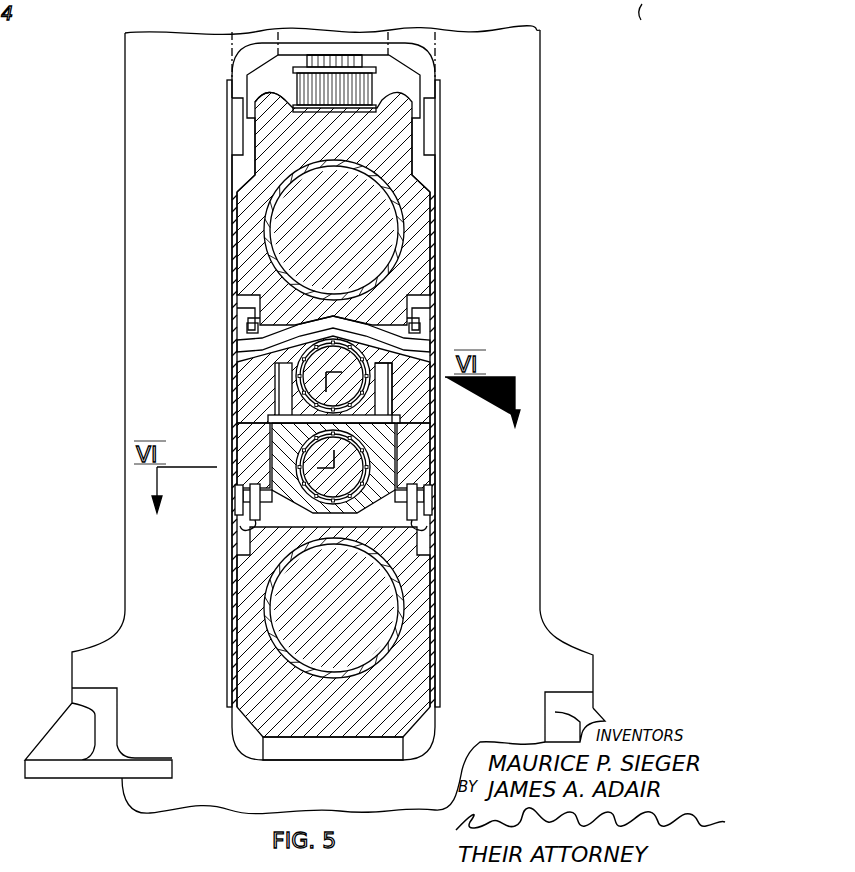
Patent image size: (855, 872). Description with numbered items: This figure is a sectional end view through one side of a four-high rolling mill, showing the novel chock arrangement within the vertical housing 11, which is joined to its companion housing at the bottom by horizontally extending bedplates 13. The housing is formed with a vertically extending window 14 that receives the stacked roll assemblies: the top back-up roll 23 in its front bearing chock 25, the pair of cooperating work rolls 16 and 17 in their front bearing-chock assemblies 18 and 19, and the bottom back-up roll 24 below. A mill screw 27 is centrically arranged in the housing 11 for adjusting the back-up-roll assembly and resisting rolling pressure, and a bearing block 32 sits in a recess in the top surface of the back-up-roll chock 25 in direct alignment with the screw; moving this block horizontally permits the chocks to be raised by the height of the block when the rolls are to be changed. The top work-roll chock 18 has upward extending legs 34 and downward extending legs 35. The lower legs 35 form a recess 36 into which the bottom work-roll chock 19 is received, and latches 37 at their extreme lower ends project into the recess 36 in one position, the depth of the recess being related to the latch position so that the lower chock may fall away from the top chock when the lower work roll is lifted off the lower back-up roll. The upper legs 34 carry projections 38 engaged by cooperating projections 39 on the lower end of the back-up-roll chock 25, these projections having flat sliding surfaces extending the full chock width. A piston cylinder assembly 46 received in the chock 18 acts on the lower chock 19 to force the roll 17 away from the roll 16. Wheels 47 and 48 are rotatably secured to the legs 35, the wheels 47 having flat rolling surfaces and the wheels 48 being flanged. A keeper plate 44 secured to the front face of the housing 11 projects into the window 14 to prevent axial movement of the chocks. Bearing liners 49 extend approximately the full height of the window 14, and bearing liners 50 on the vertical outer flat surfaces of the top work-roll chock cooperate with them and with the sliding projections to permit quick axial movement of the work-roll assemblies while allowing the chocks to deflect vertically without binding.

The housing 11 is at (160, 53).
The bedplate 13 is at (75, 768).
The window 14 is at (250, 55).
The work roll 16 is at (345, 375).
The work roll 17 is at (344, 492).
The front top work-roll bearing-chock assembly 18 is at (250, 384).
The front bottom work-roll bearing-chock assembly 19 is at (386, 440).
The back-up roll 23 is at (342, 230).
The back-up roll 24 is at (346, 607).
The front back-up-roll bearing chock 25 is at (278, 90).
The mill screw 27 is at (355, 52).
The bearing block 32 is at (340, 92).
The upward extending leg 34 is at (240, 348).
The downward extending leg 35 is at (250, 440).
The recess 36 is at (276, 418).
The latch 37 is at (244, 498).
The projection 38 is at (252, 318).
The projection 39 is at (253, 340).
The keeper plate 44 is at (647, 21).
The piston cylinder assembly 46 is at (380, 398).
The wheel 47 is at (255, 522).
The wheel 48 is at (412, 522).
The bearing liner 49 is at (232, 130).
The bearing liner 50 is at (235, 375).